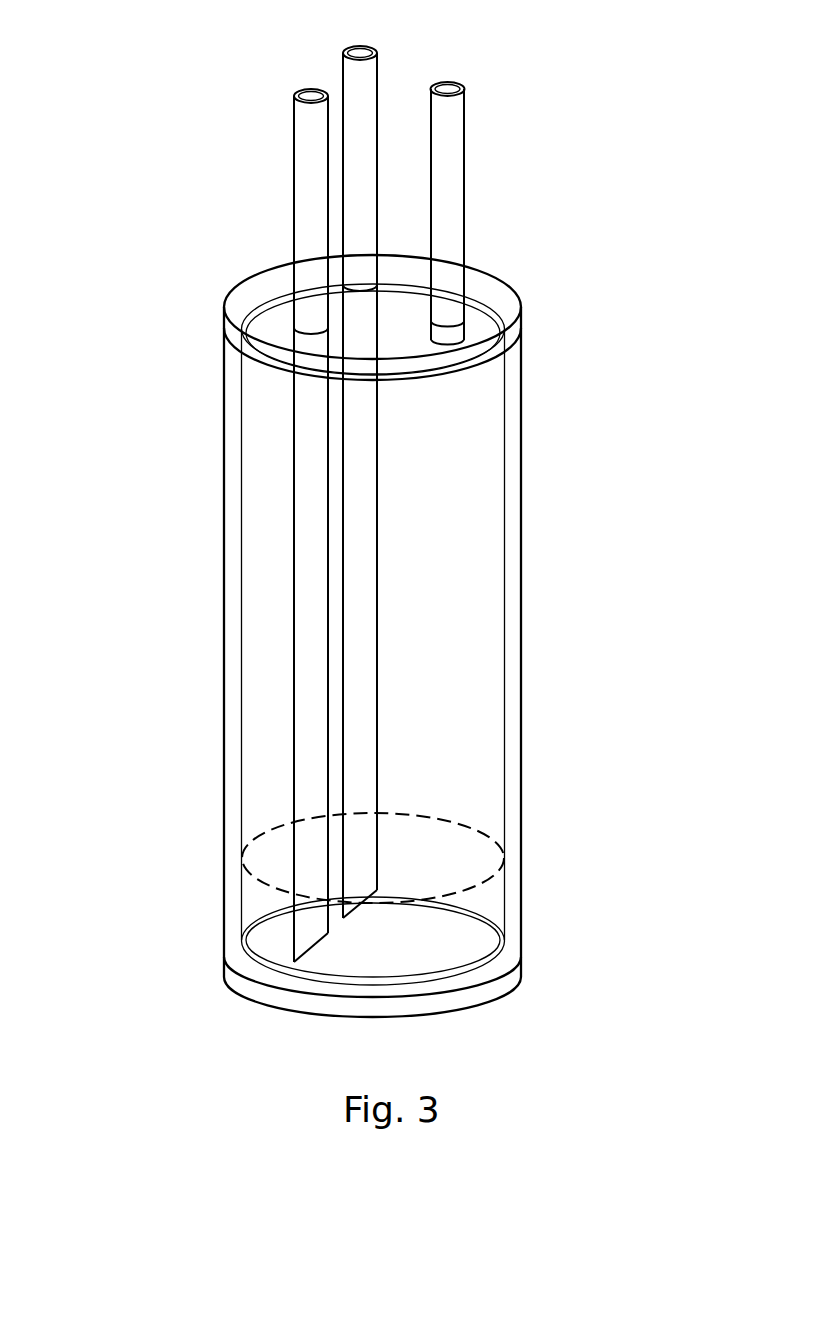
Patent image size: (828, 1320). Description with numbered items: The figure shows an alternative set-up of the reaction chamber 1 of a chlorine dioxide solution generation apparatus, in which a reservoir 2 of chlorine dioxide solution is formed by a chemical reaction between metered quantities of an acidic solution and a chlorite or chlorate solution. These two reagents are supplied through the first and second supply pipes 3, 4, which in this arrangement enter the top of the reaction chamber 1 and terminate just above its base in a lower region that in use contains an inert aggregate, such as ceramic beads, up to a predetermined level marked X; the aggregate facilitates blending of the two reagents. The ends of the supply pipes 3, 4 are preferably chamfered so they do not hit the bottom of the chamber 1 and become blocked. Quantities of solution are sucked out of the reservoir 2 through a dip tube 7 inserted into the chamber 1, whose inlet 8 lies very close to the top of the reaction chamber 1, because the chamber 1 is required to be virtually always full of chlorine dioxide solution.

The reaction chamber 1 is at (225, 788).
The reservoir 2 is at (443, 588).
The first supply pipe 3 is at (355, 72).
The second supply pipe 4 is at (304, 197).
The dip tube 7 is at (451, 115).
The inlet 8 is at (460, 347).
The predetermined level x is at (477, 830).